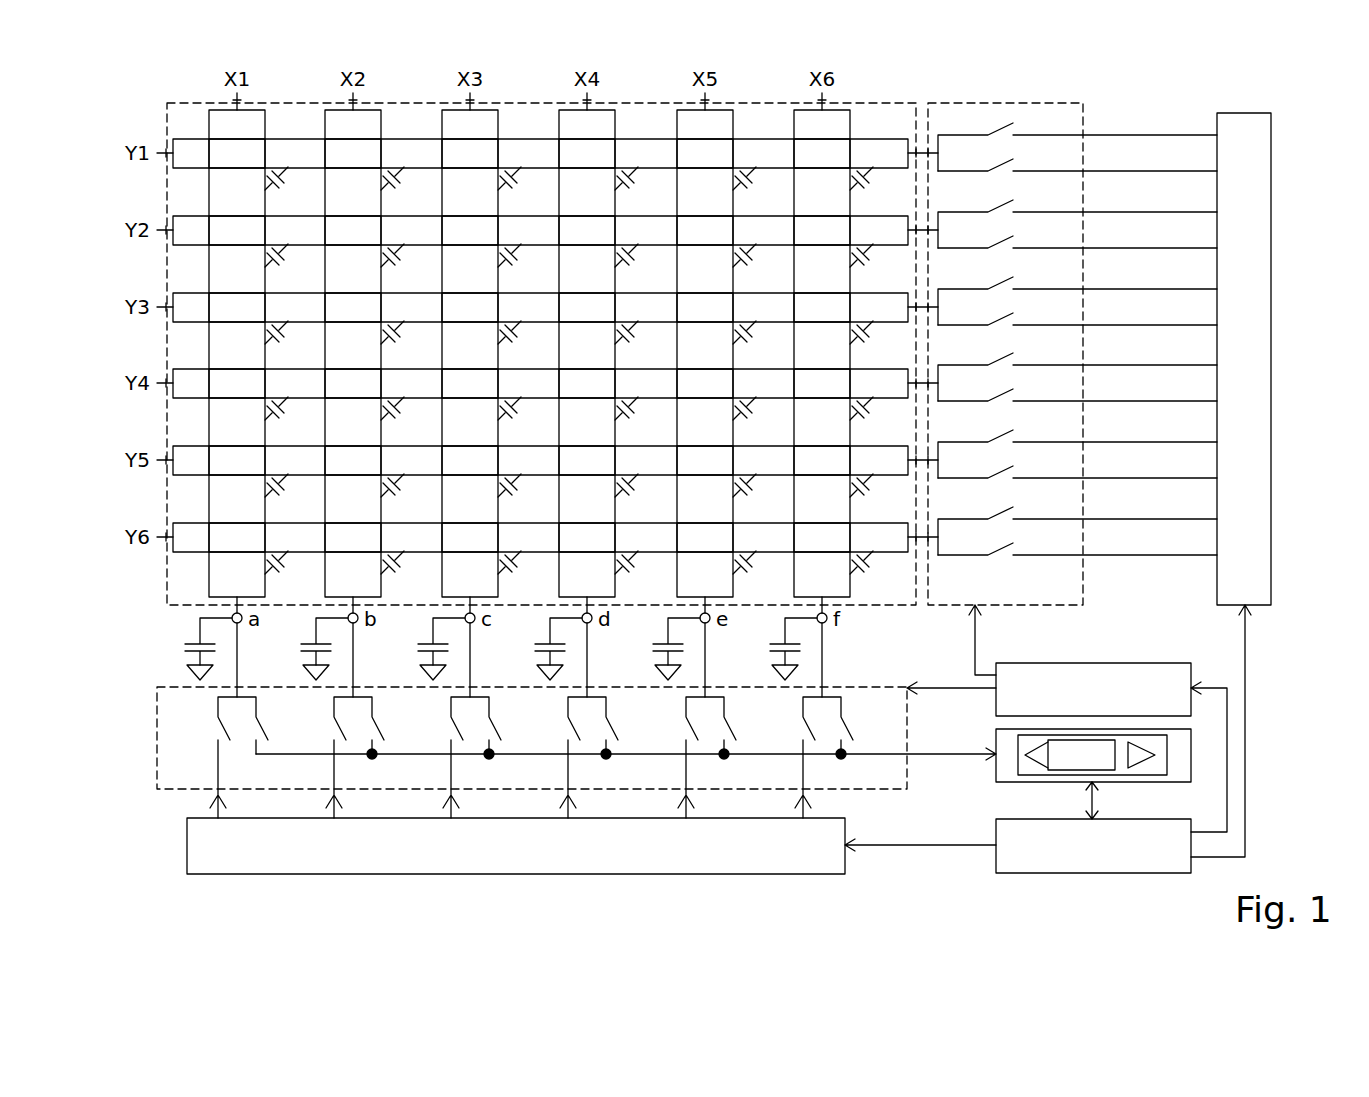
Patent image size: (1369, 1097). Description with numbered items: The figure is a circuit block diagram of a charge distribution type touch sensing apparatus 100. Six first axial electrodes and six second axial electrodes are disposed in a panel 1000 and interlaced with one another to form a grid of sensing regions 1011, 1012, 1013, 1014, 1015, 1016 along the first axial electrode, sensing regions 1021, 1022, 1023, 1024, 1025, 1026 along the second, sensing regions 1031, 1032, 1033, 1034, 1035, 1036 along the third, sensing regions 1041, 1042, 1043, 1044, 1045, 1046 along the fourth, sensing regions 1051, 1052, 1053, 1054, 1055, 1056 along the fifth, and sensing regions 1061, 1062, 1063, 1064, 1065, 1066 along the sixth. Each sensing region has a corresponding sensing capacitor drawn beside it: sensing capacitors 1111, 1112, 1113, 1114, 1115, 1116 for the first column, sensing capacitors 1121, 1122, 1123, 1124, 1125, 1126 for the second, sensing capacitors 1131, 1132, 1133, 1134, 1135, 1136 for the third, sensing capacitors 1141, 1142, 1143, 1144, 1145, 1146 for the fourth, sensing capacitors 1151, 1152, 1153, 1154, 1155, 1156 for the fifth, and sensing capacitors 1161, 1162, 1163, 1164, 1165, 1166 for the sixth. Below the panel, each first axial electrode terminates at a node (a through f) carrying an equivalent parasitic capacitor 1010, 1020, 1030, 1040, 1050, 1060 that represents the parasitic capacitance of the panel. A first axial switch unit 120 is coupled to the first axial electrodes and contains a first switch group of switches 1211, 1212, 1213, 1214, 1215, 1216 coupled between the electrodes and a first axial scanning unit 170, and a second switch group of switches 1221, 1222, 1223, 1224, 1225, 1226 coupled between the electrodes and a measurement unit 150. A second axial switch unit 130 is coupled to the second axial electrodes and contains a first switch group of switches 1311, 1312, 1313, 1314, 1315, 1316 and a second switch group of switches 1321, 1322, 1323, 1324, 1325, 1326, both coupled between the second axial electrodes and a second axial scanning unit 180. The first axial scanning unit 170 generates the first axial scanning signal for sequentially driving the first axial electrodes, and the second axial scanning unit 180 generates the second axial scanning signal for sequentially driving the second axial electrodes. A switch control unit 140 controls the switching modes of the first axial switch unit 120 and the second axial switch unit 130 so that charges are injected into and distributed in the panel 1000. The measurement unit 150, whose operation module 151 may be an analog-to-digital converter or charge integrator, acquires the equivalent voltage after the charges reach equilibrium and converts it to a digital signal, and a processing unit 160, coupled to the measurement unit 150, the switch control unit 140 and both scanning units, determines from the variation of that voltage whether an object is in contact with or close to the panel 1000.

The touch sensing apparatus 100 is at (1330, 97).
The panel 1000 is at (167, 108).
The first axial switch unit 120 is at (157, 740).
The second axial switch unit 130 is at (1085, 110).
The switch control unit 140 is at (1008, 663).
The measurement unit 150 is at (1008, 782).
The operation module 151 is at (1122, 782).
The processing unit 160 is at (1050, 873).
The first axial scanning unit 170 is at (187, 848).
The second axial scanning unit 180 is at (1272, 545).
The equivalent parasitic capacitor 1010 is at (182, 649).
The equivalent parasitic capacitor 1020 is at (298, 649).
The equivalent parasitic capacitor 1030 is at (415, 649).
The equivalent parasitic capacitor 1040 is at (532, 649).
The equivalent parasitic capacitor 1050 is at (650, 649).
The equivalent parasitic capacitor 1060 is at (767, 649).
The sensing region 1011 is at (237, 153).
The sensing region 1012 is at (237, 230).
The sensing region 1013 is at (237, 307).
The sensing region 1014 is at (237, 383).
The sensing region 1015 is at (237, 460).
The sensing region 1016 is at (237, 537).
The sensing region 1021 is at (353, 153).
The sensing region 1022 is at (353, 230).
The sensing region 1023 is at (353, 307).
The sensing region 1024 is at (353, 383).
The sensing region 1025 is at (353, 460).
The sensing region 1026 is at (353, 537).
The sensing region 1031 is at (470, 153).
The sensing region 1032 is at (470, 230).
The sensing region 1033 is at (470, 307).
The sensing region 1034 is at (470, 383).
The sensing region 1035 is at (470, 460).
The sensing region 1036 is at (470, 537).
The sensing region 1041 is at (587, 153).
The sensing region 1042 is at (587, 230).
The sensing region 1043 is at (587, 307).
The sensing region 1044 is at (587, 383).
The sensing region 1045 is at (587, 460).
The sensing region 1046 is at (587, 537).
The sensing region 1051 is at (705, 153).
The sensing region 1052 is at (705, 230).
The sensing region 1053 is at (705, 307).
The sensing region 1054 is at (705, 383).
The sensing region 1055 is at (705, 460).
The sensing region 1056 is at (705, 537).
The sensing region 1061 is at (822, 153).
The sensing region 1062 is at (822, 230).
The sensing region 1063 is at (822, 307).
The sensing region 1064 is at (822, 383).
The sensing region 1065 is at (822, 460).
The sensing region 1066 is at (822, 537).
The sensing capacitor 1111 is at (292, 188).
The sensing capacitor 1112 is at (292, 265).
The sensing capacitor 1113 is at (292, 342).
The sensing capacitor 1114 is at (292, 418).
The sensing capacitor 1115 is at (292, 495).
The sensing capacitor 1116 is at (292, 572).
The sensing capacitor 1121 is at (408, 188).
The sensing capacitor 1122 is at (408, 265).
The sensing capacitor 1123 is at (408, 342).
The sensing capacitor 1124 is at (408, 418).
The sensing capacitor 1125 is at (408, 495).
The sensing capacitor 1126 is at (408, 572).
The sensing capacitor 1131 is at (525, 188).
The sensing capacitor 1132 is at (525, 265).
The sensing capacitor 1133 is at (525, 342).
The sensing capacitor 1134 is at (525, 418).
The sensing capacitor 1135 is at (525, 495).
The sensing capacitor 1136 is at (525, 572).
The sensing capacitor 1141 is at (642, 188).
The sensing capacitor 1142 is at (642, 265).
The sensing capacitor 1143 is at (642, 342).
The sensing capacitor 1144 is at (642, 418).
The sensing capacitor 1145 is at (642, 495).
The sensing capacitor 1146 is at (642, 572).
The sensing capacitor 1151 is at (760, 188).
The sensing capacitor 1152 is at (760, 265).
The sensing capacitor 1153 is at (760, 342).
The sensing capacitor 1154 is at (760, 418).
The sensing capacitor 1155 is at (760, 495).
The sensing capacitor 1156 is at (760, 572).
The sensing capacitor 1161 is at (877, 188).
The sensing capacitor 1162 is at (877, 265).
The sensing capacitor 1163 is at (877, 342).
The sensing capacitor 1164 is at (877, 418).
The sensing capacitor 1165 is at (877, 495).
The sensing capacitor 1166 is at (877, 572).
The switch 1211 is at (215, 724).
The switch 1212 is at (331, 726).
The switch 1213 is at (448, 726).
The switch 1214 is at (565, 726).
The switch 1215 is at (683, 726).
The switch 1216 is at (800, 726).
The switch 1221 is at (246, 779).
The switch 1222 is at (362, 779).
The switch 1223 is at (479, 779).
The switch 1224 is at (596, 779).
The switch 1225 is at (714, 779).
The switch 1226 is at (831, 779).
The switch 1311 is at (1076, 141).
The switch 1312 is at (1076, 218).
The switch 1313 is at (1076, 295).
The switch 1314 is at (1076, 371).
The switch 1315 is at (1076, 448).
The switch 1316 is at (1076, 525).
The switch 1321 is at (1077, 162).
The switch 1322 is at (1077, 239).
The switch 1323 is at (1077, 316).
The switch 1324 is at (1077, 392).
The switch 1325 is at (1077, 469).
The switch 1326 is at (1077, 546).